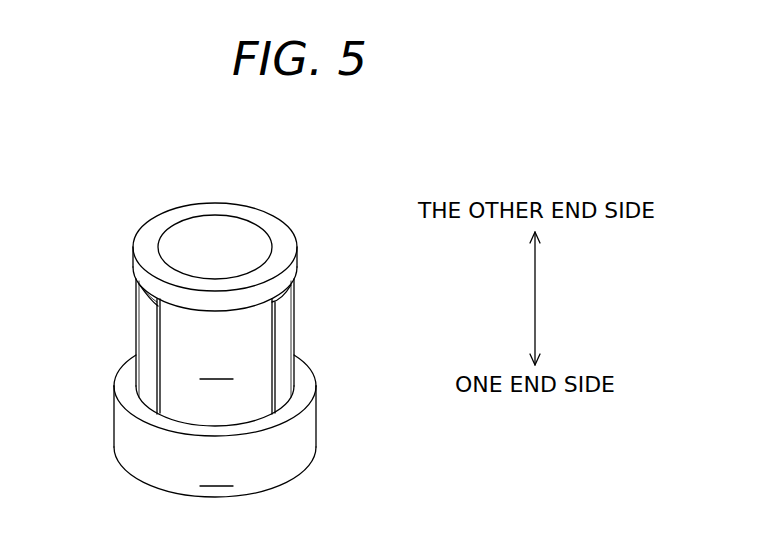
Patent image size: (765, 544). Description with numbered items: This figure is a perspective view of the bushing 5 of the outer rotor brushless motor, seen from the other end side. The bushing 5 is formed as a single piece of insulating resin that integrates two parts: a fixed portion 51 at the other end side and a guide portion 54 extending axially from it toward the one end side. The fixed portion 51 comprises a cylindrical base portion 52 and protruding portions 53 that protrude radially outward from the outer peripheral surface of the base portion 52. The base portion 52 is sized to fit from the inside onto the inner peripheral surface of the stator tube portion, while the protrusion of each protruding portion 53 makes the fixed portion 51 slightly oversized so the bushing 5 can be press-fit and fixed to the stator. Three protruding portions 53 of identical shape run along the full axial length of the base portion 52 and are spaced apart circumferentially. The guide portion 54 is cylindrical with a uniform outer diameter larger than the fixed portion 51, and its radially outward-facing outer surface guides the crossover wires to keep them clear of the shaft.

The bushing 5 is at (318, 192).
The fixed portion 51 is at (303, 246).
The base portion 52 is at (173, 308).
The protruding portion 53 is at (138, 337).
The guide portion 54 is at (320, 466).